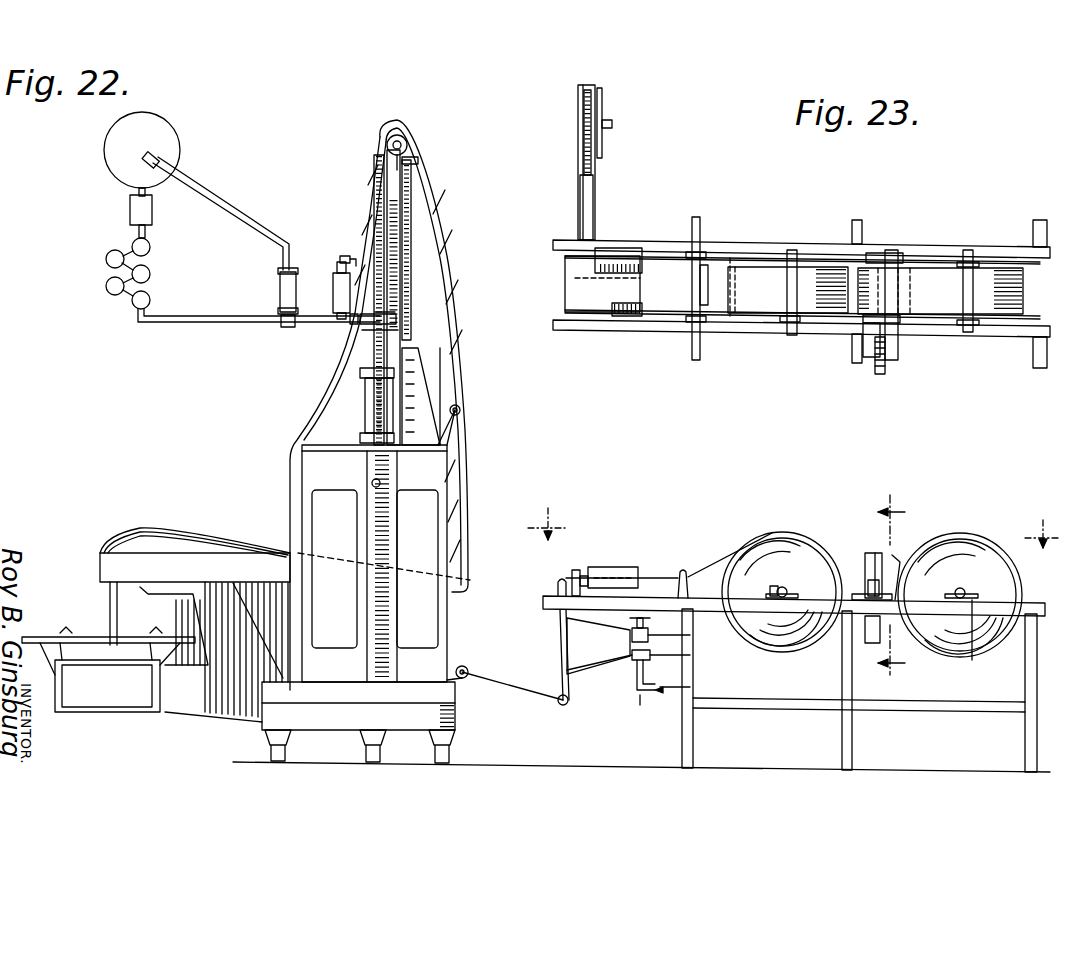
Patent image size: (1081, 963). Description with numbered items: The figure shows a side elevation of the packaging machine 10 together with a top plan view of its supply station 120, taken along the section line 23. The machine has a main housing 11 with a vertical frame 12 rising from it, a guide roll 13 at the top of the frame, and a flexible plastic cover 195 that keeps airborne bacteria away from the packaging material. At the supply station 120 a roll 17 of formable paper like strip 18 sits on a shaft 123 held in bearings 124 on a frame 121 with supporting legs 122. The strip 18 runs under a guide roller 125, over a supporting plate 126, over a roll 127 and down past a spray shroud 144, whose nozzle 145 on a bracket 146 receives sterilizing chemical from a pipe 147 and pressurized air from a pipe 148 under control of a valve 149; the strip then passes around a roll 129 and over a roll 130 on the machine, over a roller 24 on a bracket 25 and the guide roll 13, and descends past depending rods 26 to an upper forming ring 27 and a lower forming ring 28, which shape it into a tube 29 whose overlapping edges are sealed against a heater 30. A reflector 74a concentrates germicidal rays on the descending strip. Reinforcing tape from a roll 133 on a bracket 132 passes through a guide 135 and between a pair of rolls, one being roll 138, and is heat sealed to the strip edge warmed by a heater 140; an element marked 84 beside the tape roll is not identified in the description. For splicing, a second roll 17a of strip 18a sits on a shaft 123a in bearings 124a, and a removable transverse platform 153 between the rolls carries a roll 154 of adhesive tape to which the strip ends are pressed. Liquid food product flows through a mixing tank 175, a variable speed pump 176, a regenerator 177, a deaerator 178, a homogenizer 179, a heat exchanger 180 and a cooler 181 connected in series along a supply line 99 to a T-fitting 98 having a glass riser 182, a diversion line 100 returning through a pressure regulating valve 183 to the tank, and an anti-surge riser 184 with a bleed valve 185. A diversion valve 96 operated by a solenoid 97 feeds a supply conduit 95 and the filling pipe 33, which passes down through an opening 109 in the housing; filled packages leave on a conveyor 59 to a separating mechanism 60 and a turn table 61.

In FIG. 22, the packaging machine 10 is at (280, 438).
In FIG. 22, the main housing 11 is at (312, 470).
In FIG. 22, the vertical frame 12 is at (398, 340).
In FIG. 22, the guide roll 13 is at (388, 140).
In FIG. 22, the roll 17 is at (752, 542).
In FIG. 23, the roll 17 is at (770, 265).
In FIG. 22, the roll 17a is at (966, 542).
In FIG. 23, the roll 17a is at (1010, 302).
In FIG. 22, the formable paper like strip 18 is at (382, 200).
In FIG. 23, the formable paper like strip 18 is at (665, 300).
In FIG. 22, the additional formable paper like strip 18a is at (895, 575).
In FIG. 22, the section line 23— 23 is at (794, 516).
In FIG. 22, the roller 24 is at (416, 156).
In FIG. 22, the bracket 25 is at (420, 132).
In FIG. 22, the depending rods 26 is at (598, 599).
In FIG. 22, the upper forming ring 27 is at (360, 374).
In FIG. 22, the lower forming ring 28 is at (360, 438).
In FIG. 22, the formable paper like tube 29 is at (365, 398).
In FIG. 22, the heater 30 is at (420, 402).
In FIG. 22, the filling pipe 33 is at (416, 368).
In FIG. 22, the conveyor 59 is at (240, 635).
In FIG. 22, the mechanism 60 is at (115, 563).
In FIG. 22, the turn table 61 is at (38, 637).
In FIG. 22, the reflector 74a is at (415, 242).
In FIG. 23, the rack 84 is at (592, 172).
In FIG. 22, the supply conduit 95 is at (410, 320).
In FIG. 22, the diversion valve 96 is at (362, 368).
In FIG. 22, the solenoid 97 is at (350, 326).
In FIG. 22, the T-fitting 98 is at (288, 327).
In FIG. 22, the food product supply line 99 is at (200, 322).
In FIG. 22, the diversion line 100 is at (245, 232).
In FIG. 22, the opening 109 is at (380, 481).
In FIG. 22, the supply station 120 is at (733, 545).
In FIG. 23, the supply station 120 is at (900, 240).
In FIG. 22, the frame 121 is at (1030, 606).
In FIG. 23, the frame 121 is at (990, 246).
In FIG. 22, the supporting legs 122 is at (700, 748).
In FIG. 23, the supporting legs 122 is at (700, 220).
In FIG. 22, the shaft 123 is at (786, 588).
In FIG. 23, the shaft 123 is at (792, 335).
In FIG. 22, the shaft 123a is at (968, 592).
In FIG. 22, the bearings 124 is at (780, 600).
In FIG. 23, the bearings 124 is at (775, 324).
In FIG. 22, the bearings 124a is at (979, 642).
In FIG. 22, the guide roller 125 is at (685, 572).
In FIG. 23, the guide roller 125 is at (708, 280).
In FIG. 23, the supporting plate 126 is at (620, 318).
In FIG. 22, the roll 127 is at (558, 584).
In FIG. 22, the roll 129 is at (466, 666).
In FIG. 22, the roll 130 is at (461, 411).
In FIG. 23, the bracket 132 is at (578, 172).
In FIG. 23, the roll 133 is at (603, 145).
In FIG. 23, the guide 135 is at (592, 206).
In FIG. 22, the roll 138 is at (566, 706).
In FIG. 22, the heater 140 is at (612, 572).
In FIG. 23, the heater 140 is at (620, 253).
In FIG. 22, the spray shroud 144 is at (588, 670).
In FIG. 22, the nozzle 145 is at (682, 654).
In FIG. 22, the bracket 146 is at (665, 672).
In FIG. 22, the pipe 147 is at (644, 698).
In FIG. 22, the pipe 148 is at (625, 632).
In FIG. 22, the valve 149 is at (681, 631).
In FIG. 22, the transverse platform 153 is at (858, 580).
In FIG. 23, the transverse platform 153 is at (900, 342).
In FIG. 22, the roll of thermoplastic adhesive tape 154 is at (872, 553).
In FIG. 23, the roll of thermoplastic adhesive tape 154 is at (882, 374).
In FIG. 22, the mixing tank 175 is at (104, 150).
In FIG. 22, the variable speed pump 176 is at (130, 210).
In FIG. 22, the preheater or regenerator 177 is at (150, 245).
In FIG. 22, the deaerator 178 is at (106, 257).
In FIG. 22, the adjustable homogenizer 179 is at (150, 272).
In FIG. 22, the heat exchanger 180 is at (106, 286).
In FIG. 22, the cooler 181 is at (150, 298).
In FIG. 22, the glass riser 182 is at (278, 296).
In FIG. 22, the pressure regulating valve 183 is at (163, 152).
In FIG. 22, the anti-surge riser 184 is at (335, 283).
In FIG. 22, the bleed valve 185 is at (344, 256).
In FIG. 22, the flexible plastic cover 195 is at (446, 276).